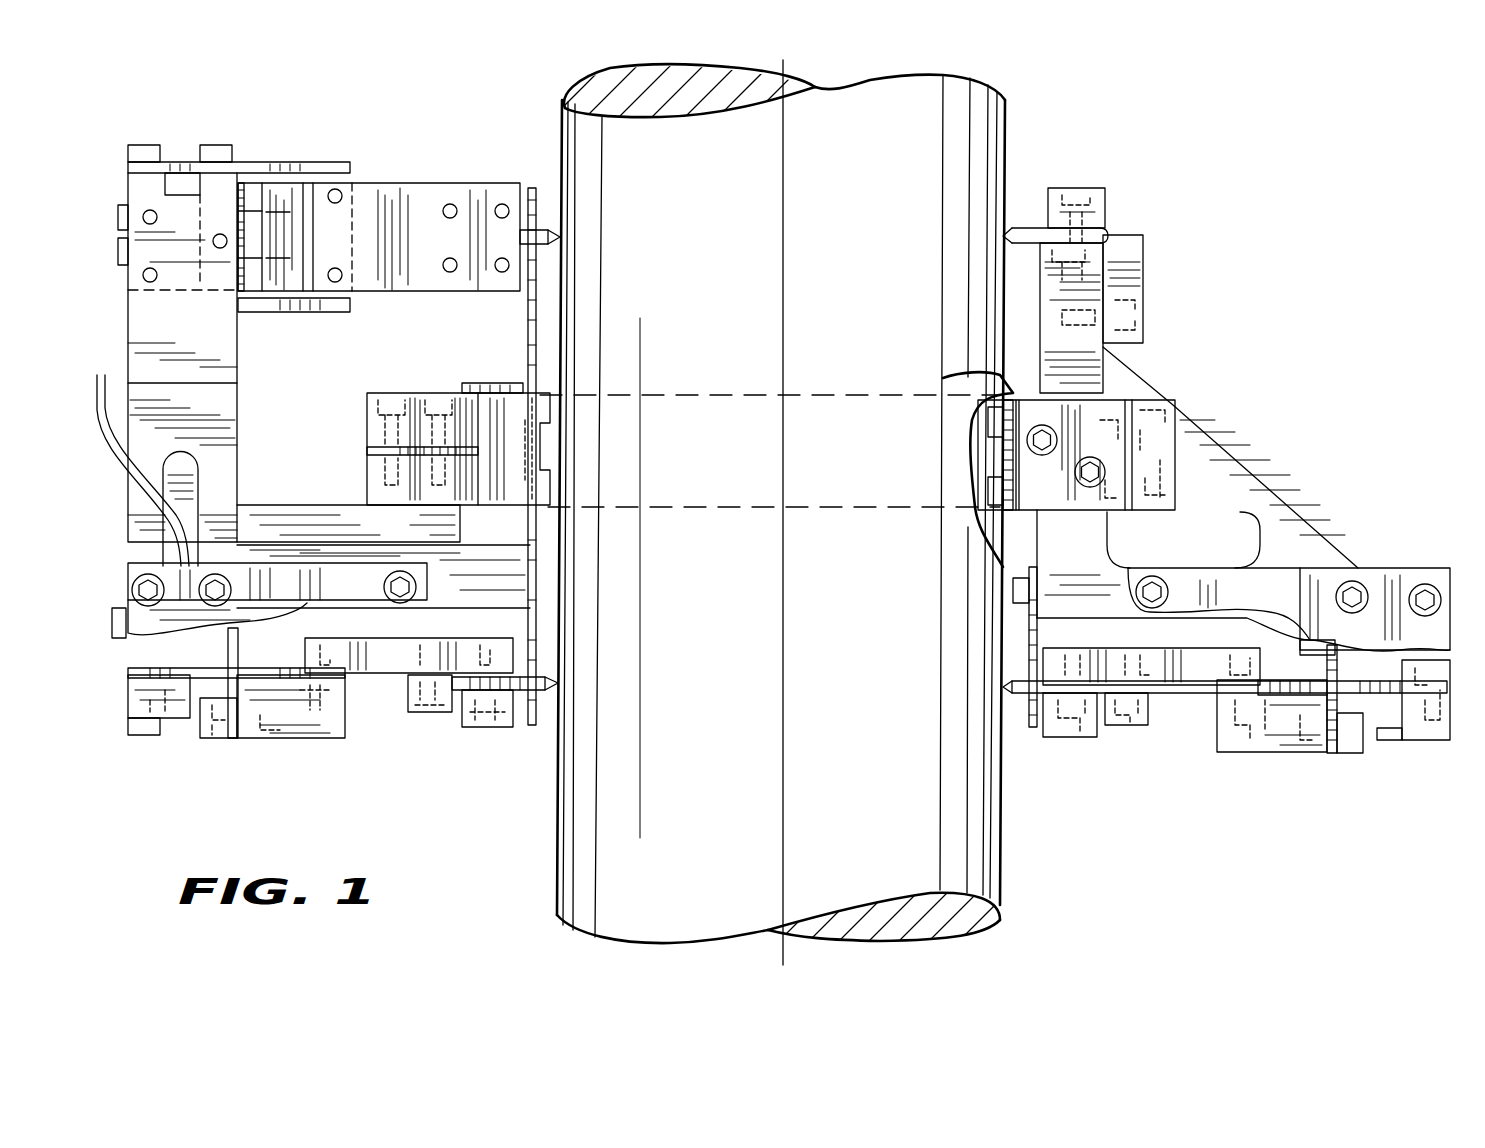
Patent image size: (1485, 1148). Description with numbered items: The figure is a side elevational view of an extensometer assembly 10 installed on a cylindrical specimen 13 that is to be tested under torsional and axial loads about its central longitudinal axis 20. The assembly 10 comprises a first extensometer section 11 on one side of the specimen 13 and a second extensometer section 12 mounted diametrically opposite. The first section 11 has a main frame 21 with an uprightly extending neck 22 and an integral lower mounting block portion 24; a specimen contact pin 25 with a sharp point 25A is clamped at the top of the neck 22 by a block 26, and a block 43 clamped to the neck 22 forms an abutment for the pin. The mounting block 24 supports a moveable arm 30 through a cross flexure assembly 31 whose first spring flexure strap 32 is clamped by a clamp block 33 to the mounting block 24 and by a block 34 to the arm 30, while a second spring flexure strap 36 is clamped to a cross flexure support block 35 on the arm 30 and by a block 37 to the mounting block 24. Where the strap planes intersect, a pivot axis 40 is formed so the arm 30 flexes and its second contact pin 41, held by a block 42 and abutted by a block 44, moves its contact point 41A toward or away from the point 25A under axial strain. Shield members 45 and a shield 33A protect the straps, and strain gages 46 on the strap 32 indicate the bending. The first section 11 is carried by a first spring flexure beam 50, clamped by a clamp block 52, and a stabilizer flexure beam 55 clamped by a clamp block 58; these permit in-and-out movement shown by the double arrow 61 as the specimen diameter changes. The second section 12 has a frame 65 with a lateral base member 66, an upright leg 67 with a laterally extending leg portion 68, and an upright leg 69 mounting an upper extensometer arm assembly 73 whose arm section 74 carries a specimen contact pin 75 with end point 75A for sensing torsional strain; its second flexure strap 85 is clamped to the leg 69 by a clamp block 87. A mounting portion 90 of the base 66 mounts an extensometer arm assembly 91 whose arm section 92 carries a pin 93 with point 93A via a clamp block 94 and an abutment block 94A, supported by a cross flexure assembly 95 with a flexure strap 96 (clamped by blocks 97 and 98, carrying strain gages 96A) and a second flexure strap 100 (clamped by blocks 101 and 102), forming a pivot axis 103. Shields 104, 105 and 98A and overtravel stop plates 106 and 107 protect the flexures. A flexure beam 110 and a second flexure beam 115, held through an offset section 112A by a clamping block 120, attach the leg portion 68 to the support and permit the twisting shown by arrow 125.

The extensometer assembly 10 is at (536, 826).
The first extensometer section 11 is at (1268, 484).
The second extensometer section 12 is at (146, 750).
The specimen 13 is at (955, 915).
The central longitudinal axis 20 is at (783, 835).
The main frame 21 is at (1130, 370).
The neck 22 is at (1060, 295).
The lower mounting block portion 24 is at (1372, 660).
The specimen contact pin 25 is at (1022, 228).
The sharp point 25A is at (1010, 242).
The block 26 is at (1100, 210).
The moveable arm 30 is at (1150, 688).
The cross flexure assembly 31 is at (1340, 730).
The first spring flexure strap 32 is at (1365, 740).
The clamp block 33 is at (1440, 705).
The shield 33A is at (1390, 740).
The block 34 is at (1218, 727).
The cross flexure support block 35 is at (1258, 752).
The second spring flexure strap 36 is at (1310, 700).
The block 37 is at (1330, 630).
The pivot axis 40 is at (1350, 756).
The second contact pin 41 is at (1018, 697).
The contact point 41A is at (1008, 690).
The block 42 is at (1073, 740).
The block 43 is at (1140, 278).
The block 44 is at (1120, 728).
The shield members 45 is at (1265, 568).
The strain gages 46 is at (1325, 655).
The first spring flexure beam 50 is at (1000, 400).
The clamp block 52 is at (987, 460).
The stabilizer flexure beam 55 is at (1145, 512).
The clamp block 58 is at (1150, 480).
The double arrow 61 is at (1395, 462).
The frame 65 is at (295, 445).
The lateral base member 66 is at (412, 556).
The upright extending leg 67 is at (505, 546).
The laterally extending leg portion 68 is at (515, 465).
The upright extending leg 69 is at (215, 415).
The upper extensometer arm assembly 73 is at (422, 178).
The arm section 74 is at (370, 190).
The specimen contact pin 75 is at (548, 225).
The end point 75A is at (560, 243).
The second flexure strap 85 is at (255, 280).
The clamp block 87 is at (275, 195).
The mounting portion 90 is at (118, 625).
The extensometer arm assembly 91 is at (333, 752).
The arm section 92 is at (390, 652).
The pin 93 is at (545, 680).
The specimen engaging point 93A is at (560, 690).
The clamp block 94 is at (485, 727).
The abutment block 94A is at (420, 712).
The cross flexure assembly 95 is at (260, 666).
The flexure strap 96 is at (300, 688).
The strain gages 96A is at (200, 660).
The clamp block 97 is at (330, 738).
The clamp block 98 is at (135, 700).
The shield 98A is at (180, 720).
The second flexure strap 100 is at (240, 712).
The clamp block 101 is at (215, 740).
The clamp block 102 is at (234, 715).
The pivot axis 103 is at (228, 676).
The shield 104 is at (135, 592).
The shield 105 is at (300, 145).
The overtravel stop plate 106 is at (536, 330).
The overtravel stop plate 107 is at (1030, 640).
The flexure beam 110 is at (445, 490).
The offset section 112A is at (385, 492).
The second flexure beam 115 is at (367, 451).
The clamping block 120 is at (420, 405).
The arrow 125 is at (410, 325).